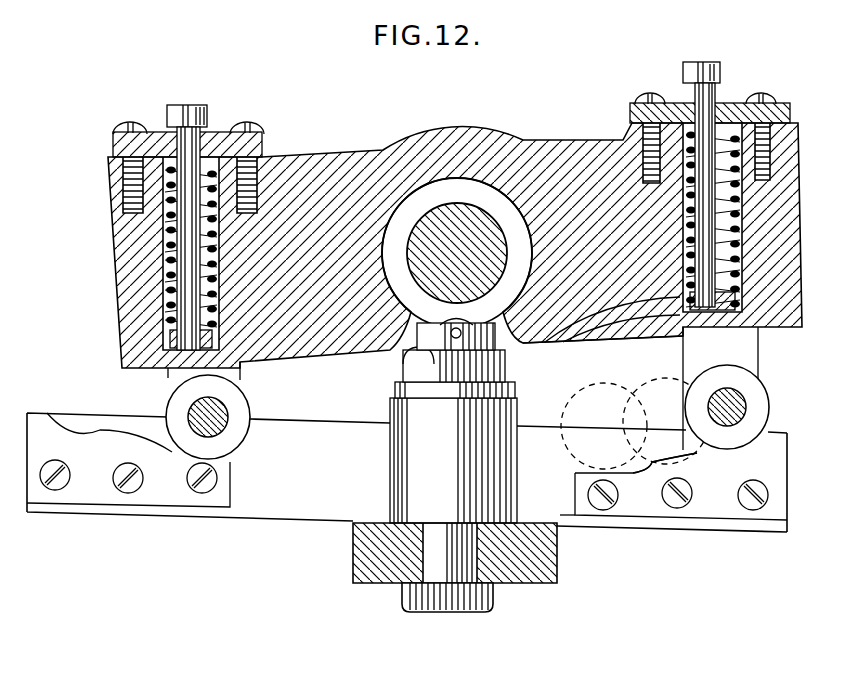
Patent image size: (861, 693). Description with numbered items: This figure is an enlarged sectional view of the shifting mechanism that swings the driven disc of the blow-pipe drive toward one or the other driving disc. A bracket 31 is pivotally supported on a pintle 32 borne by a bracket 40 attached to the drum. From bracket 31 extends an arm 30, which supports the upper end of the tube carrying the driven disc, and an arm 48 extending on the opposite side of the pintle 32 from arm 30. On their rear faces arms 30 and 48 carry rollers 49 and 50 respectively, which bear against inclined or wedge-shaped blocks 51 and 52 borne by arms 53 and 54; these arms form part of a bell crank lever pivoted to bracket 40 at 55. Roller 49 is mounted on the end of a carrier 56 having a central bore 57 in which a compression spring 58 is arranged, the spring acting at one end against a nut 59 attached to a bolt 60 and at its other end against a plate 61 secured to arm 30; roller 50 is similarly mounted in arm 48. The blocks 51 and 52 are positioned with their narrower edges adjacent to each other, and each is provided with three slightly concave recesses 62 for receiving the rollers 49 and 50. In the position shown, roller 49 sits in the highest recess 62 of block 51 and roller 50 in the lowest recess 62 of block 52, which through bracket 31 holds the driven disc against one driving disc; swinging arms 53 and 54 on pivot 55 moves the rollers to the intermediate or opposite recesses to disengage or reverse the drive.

The arm 30 is at (800, 135).
The bracket 31 is at (523, 138).
The pintle 32 is at (440, 223).
The bracket 40 is at (353, 565).
The arm 48 is at (112, 255).
The roller 49 is at (700, 380).
The roller 50 is at (173, 397).
The wedge-shaped block 51 is at (712, 510).
The wedge-shaped block 52 is at (80, 480).
The arm 53 is at (560, 515).
The arm 54 is at (250, 507).
The pivot point 55 is at (402, 597).
The carrier 56 is at (758, 337).
The central bore 57 is at (608, 342).
The compression spring 58 is at (677, 220).
The nut 59 is at (563, 343).
The bolt 60 is at (717, 74).
The plate 61 is at (680, 107).
The concave recess 62 is at (695, 458).